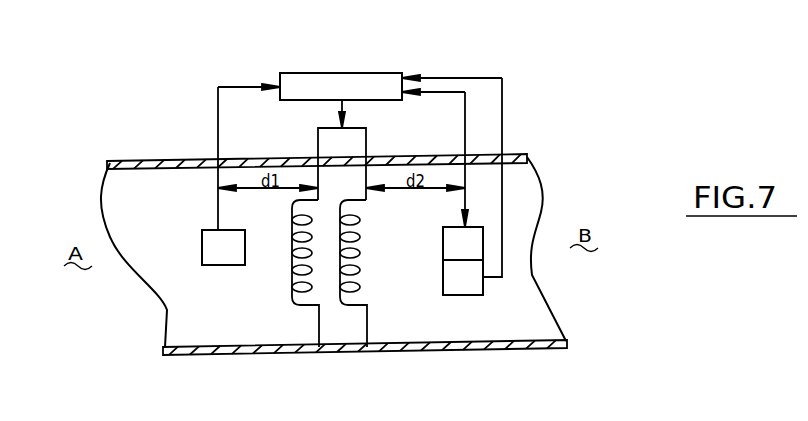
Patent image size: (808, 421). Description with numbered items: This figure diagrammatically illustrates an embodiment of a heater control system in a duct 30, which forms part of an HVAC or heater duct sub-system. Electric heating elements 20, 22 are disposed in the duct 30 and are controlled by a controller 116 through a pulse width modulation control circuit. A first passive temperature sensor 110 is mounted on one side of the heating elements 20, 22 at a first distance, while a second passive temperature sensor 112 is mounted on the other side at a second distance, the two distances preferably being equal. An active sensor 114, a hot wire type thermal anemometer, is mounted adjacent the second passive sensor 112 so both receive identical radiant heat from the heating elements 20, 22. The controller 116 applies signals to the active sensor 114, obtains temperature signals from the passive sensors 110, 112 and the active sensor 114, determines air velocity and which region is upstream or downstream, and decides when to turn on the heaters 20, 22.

The controller 116 is at (386, 73).
The passive temperature sensor SP2 110 is at (218, 265).
The active sensor SA 114 is at (443, 243).
The passive temperature sensor SP1 112 is at (484, 285).
The heating element 20 is at (292, 303).
The heating element 22 is at (360, 288).
The duct 30 is at (423, 350).